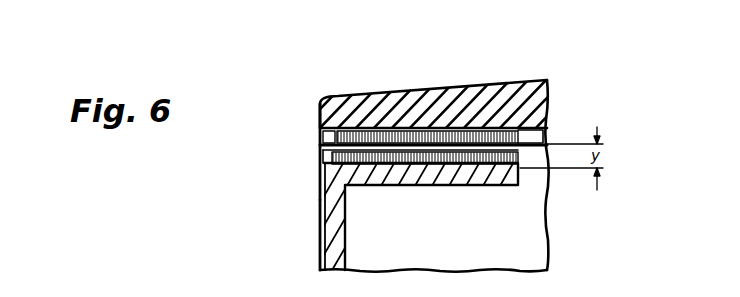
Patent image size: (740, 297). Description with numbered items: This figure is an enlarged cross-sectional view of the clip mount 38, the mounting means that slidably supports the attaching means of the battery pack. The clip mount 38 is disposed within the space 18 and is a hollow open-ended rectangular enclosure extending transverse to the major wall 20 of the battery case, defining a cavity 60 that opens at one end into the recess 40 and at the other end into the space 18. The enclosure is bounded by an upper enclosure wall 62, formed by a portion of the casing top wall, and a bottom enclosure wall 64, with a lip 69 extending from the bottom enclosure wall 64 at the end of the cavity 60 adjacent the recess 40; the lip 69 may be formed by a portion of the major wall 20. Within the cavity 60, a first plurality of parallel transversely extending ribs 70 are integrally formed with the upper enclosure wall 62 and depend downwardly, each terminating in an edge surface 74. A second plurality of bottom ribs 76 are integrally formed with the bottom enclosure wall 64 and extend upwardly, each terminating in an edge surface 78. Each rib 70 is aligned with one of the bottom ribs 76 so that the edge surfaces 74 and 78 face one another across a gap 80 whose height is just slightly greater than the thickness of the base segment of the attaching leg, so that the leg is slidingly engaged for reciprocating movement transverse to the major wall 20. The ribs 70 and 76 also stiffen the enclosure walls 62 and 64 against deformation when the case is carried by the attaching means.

The space 18 is at (523, 218).
The major wall 20 is at (321, 250).
The clip mount 38 is at (452, 186).
The recess 40 is at (320, 208).
The cavity 60 is at (395, 143).
The upper enclosure wall 62 is at (489, 96).
The bottom enclosure wall 64 is at (495, 186).
The lip 69 is at (320, 170).
The ribs 70 is at (513, 114).
The edge surface 74 is at (444, 152).
The bottom ribs 76 is at (383, 186).
The edge surface 78 is at (411, 186).
The gap 80 is at (530, 146).